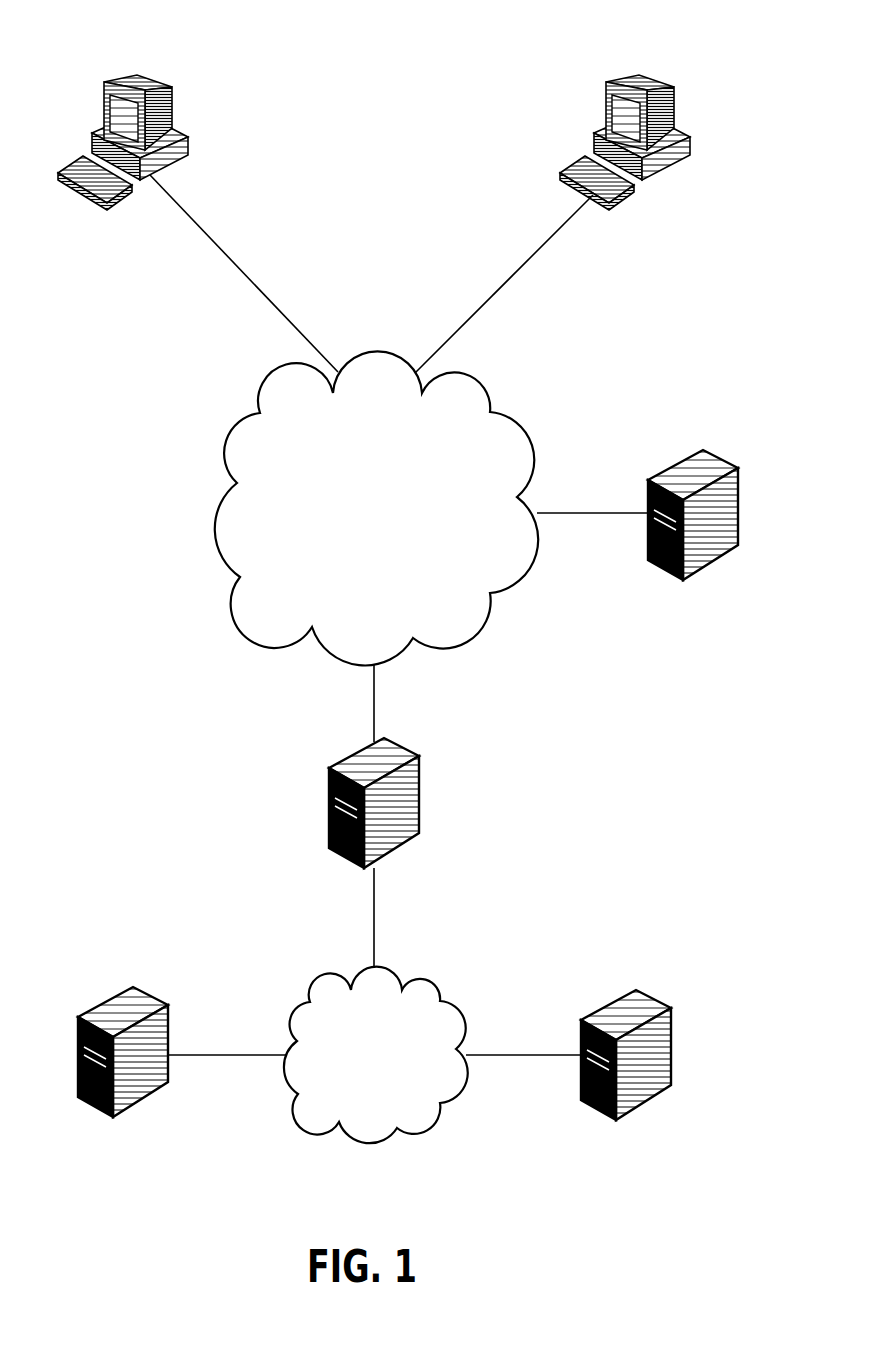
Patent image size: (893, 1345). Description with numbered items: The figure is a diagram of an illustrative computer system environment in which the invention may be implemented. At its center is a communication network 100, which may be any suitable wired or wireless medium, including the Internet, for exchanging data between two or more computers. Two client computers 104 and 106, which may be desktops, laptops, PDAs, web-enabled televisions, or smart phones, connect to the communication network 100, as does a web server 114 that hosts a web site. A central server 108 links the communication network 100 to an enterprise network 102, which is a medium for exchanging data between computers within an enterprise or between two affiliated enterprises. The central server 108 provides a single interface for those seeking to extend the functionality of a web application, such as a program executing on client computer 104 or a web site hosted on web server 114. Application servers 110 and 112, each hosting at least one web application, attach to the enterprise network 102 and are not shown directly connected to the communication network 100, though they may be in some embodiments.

The communication network 100 is at (357, 506).
The enterprise network 102 is at (358, 1053).
The client computer 104 is at (173, 75).
The client computer 106 is at (675, 75).
The central server 108 is at (413, 740).
The application server 110 is at (163, 985).
The application server 112 is at (666, 990).
The web server 114 is at (733, 450).